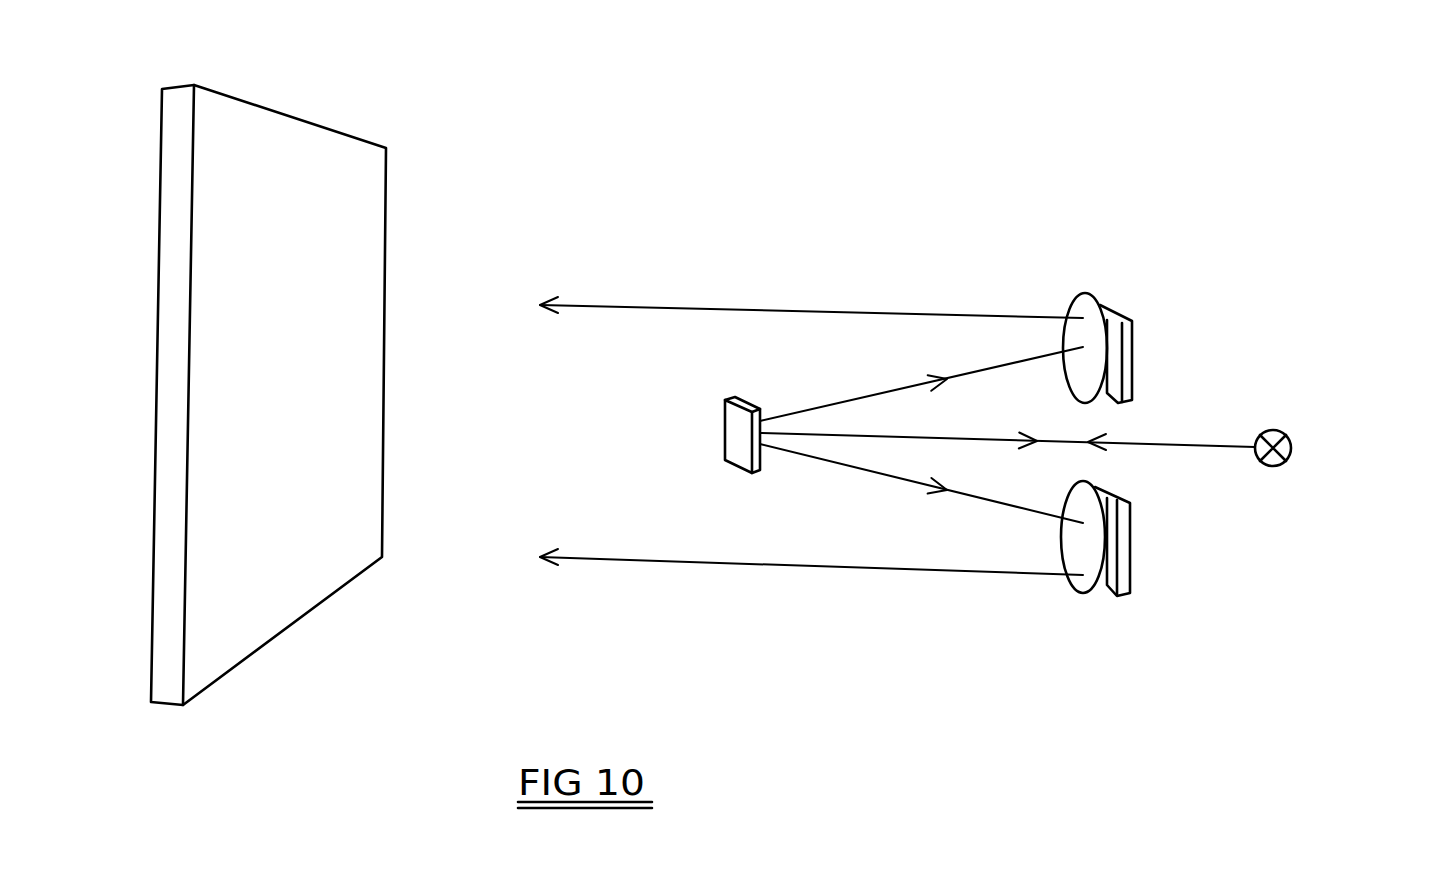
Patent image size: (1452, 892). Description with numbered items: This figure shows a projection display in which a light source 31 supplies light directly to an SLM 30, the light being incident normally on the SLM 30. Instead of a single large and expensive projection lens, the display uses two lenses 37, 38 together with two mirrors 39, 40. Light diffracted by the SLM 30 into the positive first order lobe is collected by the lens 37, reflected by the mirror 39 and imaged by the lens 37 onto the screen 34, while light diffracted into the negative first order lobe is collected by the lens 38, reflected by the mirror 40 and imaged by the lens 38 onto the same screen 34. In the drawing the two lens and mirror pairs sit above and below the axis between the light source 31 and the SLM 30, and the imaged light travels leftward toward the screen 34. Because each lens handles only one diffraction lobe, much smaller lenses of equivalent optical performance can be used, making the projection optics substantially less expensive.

The SLM 30 is at (724, 447).
The light source 31 is at (1274, 432).
The screen 34 is at (376, 172).
The lens 37 is at (1078, 302).
The lens 38 is at (1082, 586).
The mirror 39 is at (1136, 332).
The mirror 40 is at (1131, 575).